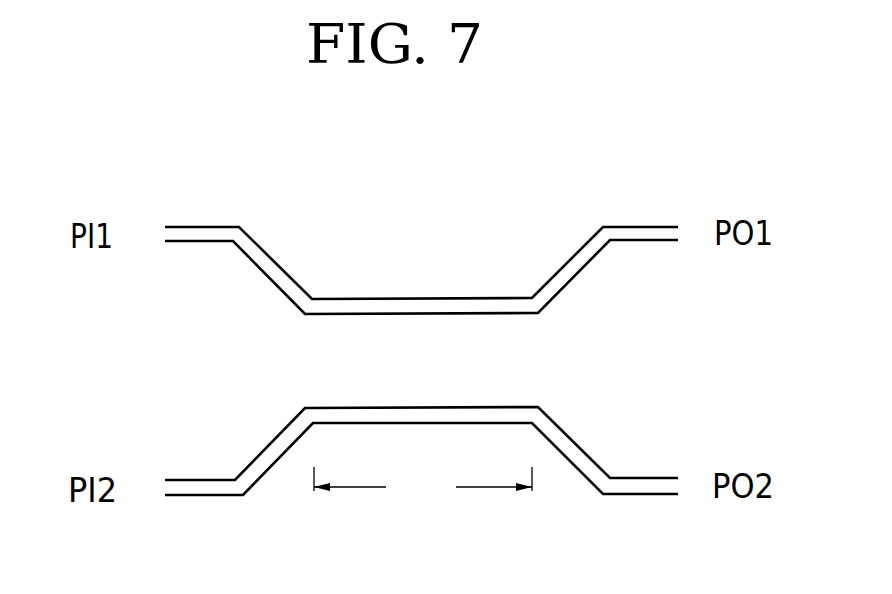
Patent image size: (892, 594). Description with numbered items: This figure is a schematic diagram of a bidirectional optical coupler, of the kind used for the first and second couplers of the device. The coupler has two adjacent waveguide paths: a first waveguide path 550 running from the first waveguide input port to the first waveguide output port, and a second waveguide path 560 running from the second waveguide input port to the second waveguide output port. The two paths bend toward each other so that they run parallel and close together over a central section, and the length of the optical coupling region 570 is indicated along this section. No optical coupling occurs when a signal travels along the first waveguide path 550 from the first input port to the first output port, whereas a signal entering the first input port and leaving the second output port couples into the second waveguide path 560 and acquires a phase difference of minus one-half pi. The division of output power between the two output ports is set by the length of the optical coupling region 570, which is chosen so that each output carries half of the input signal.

The first waveguide path 550 is at (641, 224).
The second waveguide path 560 is at (642, 497).
The length of the optical coupling region 570 is at (423, 486).